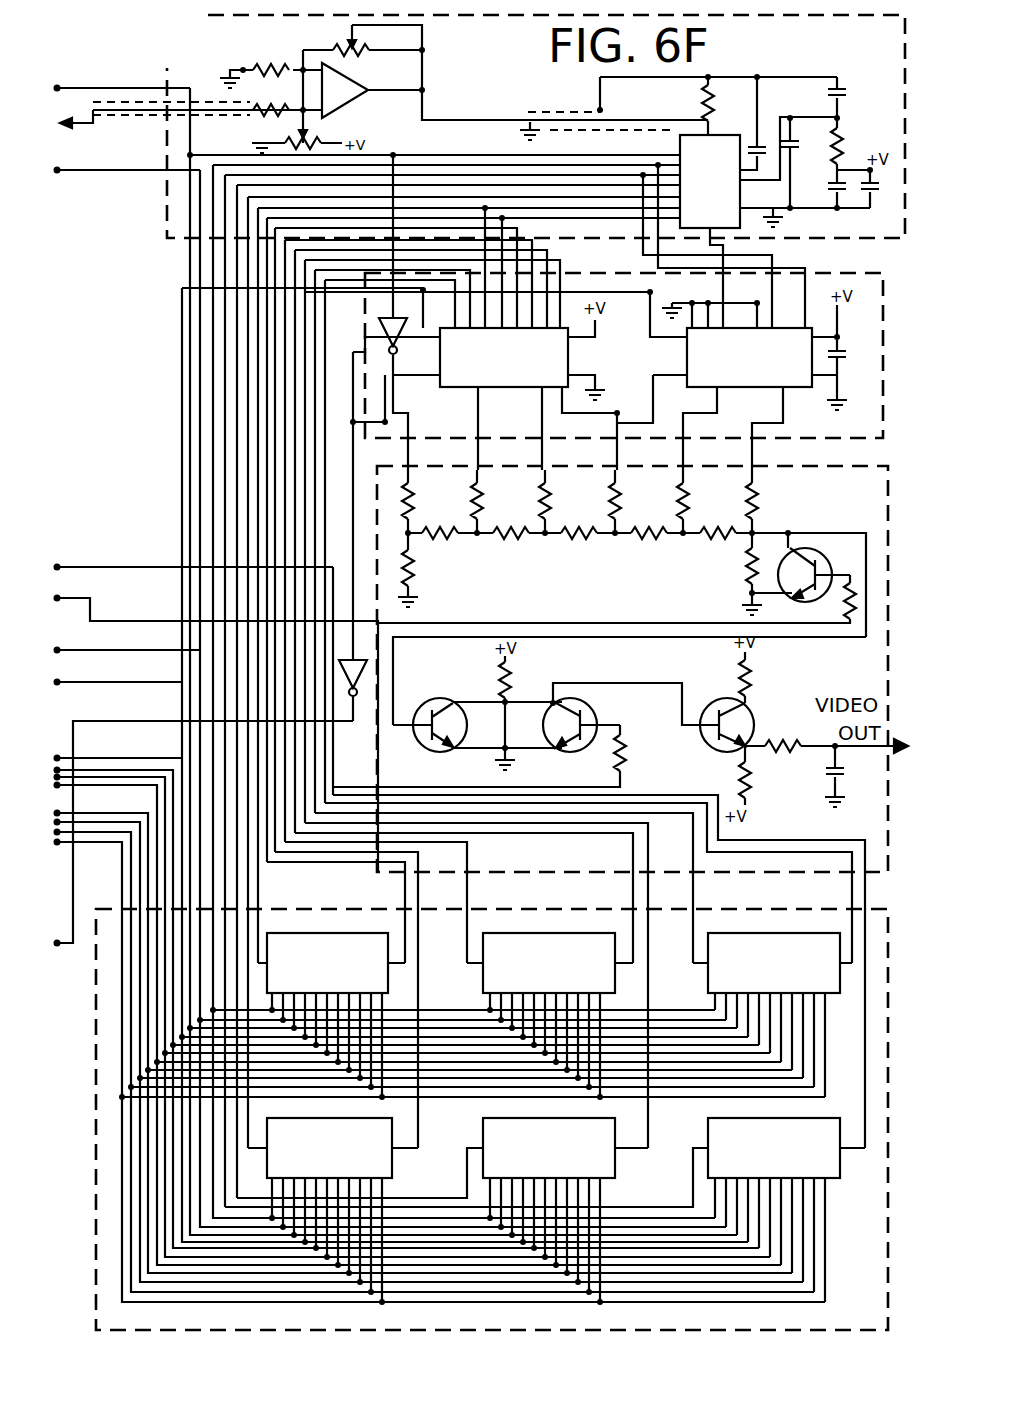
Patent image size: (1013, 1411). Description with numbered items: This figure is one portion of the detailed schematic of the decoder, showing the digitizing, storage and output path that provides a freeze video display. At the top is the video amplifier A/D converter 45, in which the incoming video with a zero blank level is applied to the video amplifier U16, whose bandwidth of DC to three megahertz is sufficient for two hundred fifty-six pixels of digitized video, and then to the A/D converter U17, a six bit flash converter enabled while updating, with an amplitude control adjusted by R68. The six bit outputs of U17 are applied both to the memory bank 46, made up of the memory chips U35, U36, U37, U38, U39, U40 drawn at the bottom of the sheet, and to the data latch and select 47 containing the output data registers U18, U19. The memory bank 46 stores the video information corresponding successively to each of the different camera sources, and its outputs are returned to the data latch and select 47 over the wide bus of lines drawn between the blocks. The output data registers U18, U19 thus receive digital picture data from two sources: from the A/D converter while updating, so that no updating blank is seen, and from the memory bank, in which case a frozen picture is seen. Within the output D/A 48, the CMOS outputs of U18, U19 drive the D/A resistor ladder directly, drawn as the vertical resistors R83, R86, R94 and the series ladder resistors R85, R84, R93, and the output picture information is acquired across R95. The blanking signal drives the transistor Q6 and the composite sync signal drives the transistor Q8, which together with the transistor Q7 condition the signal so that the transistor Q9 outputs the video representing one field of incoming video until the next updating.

The video amplifier A/D converter 45 is at (483, 125).
The data latch and select 47 is at (365, 308).
The output D/A 48 is at (842, 478).
The memory bank 46 is at (613, 910).
The amplitude control R68 is at (340, 50).
The video amplifier U16 is at (362, 96).
The A/D converter U17 is at (710, 181).
The output data register U18 is at (504, 357).
The output data register U19 is at (749, 357).
The D/A resistor ladder resistor R83 is at (418, 486).
The D/A resistor ladder resistor R86 is at (486, 486).
The D/A resistor ladder resistor R94 is at (757, 497).
The D/A resistor ladder resistor R85 is at (443, 545).
The D/A resistor ladder resistor R84 is at (418, 575).
The D/A resistor ladder resistor R93 is at (702, 540).
The output resistor R95 is at (748, 572).
The blanking transistor Q6 is at (806, 548).
The transistor Q7 is at (440, 698).
The composite sync transistor Q8 is at (594, 704).
The video output transistor Q9 is at (746, 712).
The memory chip U35 is at (327, 963).
The memory chip U36 is at (549, 963).
The memory chip U37 is at (774, 963).
The memory chip U38 is at (329, 1148).
The memory chip U39 is at (549, 1148).
The memory chip U40 is at (774, 1148).